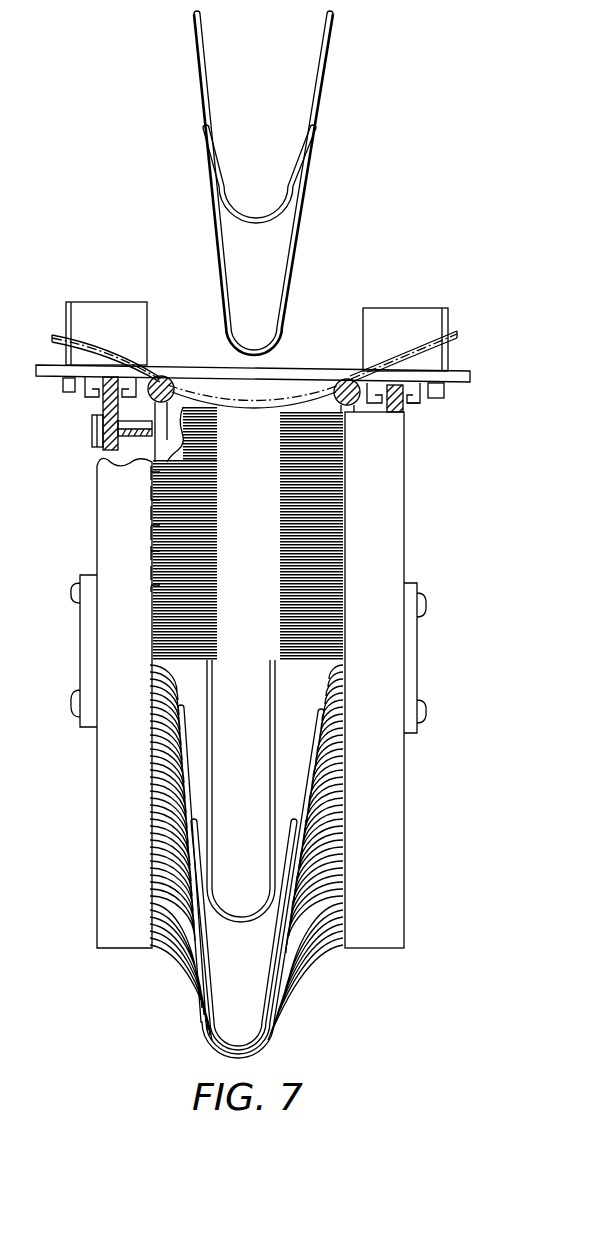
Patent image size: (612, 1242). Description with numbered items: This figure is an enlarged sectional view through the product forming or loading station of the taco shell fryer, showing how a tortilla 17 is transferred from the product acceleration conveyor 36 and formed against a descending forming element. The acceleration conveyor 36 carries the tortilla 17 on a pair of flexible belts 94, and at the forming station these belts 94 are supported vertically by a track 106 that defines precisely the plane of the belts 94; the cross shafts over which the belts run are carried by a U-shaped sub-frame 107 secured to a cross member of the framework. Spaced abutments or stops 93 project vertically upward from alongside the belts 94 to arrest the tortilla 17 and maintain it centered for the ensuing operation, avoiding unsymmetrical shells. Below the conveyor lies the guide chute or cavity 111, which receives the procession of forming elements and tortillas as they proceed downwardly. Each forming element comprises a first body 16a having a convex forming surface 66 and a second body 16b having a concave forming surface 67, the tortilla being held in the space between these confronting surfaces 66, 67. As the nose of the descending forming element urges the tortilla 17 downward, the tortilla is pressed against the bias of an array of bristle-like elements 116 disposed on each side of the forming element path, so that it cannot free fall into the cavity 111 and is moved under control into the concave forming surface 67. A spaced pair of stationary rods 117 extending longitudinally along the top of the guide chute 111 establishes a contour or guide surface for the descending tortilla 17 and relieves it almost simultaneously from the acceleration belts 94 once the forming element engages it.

The first body 16a is at (293, 290).
The second body 16b is at (318, 90).
The tortilla 17 is at (462, 329).
The product acceleration conveyor 36 is at (417, 410).
The convex forming surface 66 is at (307, 224).
The concave forming surface 67 is at (212, 84).
The stops 93 is at (127, 302).
The belts 94 is at (93, 393).
The track 106 is at (108, 447).
The U-shaped sub-frame 107 is at (160, 443).
The guide chute 111 is at (243, 458).
The bristle-like elements 116 is at (289, 550).
The stationary rods 117 is at (163, 378).